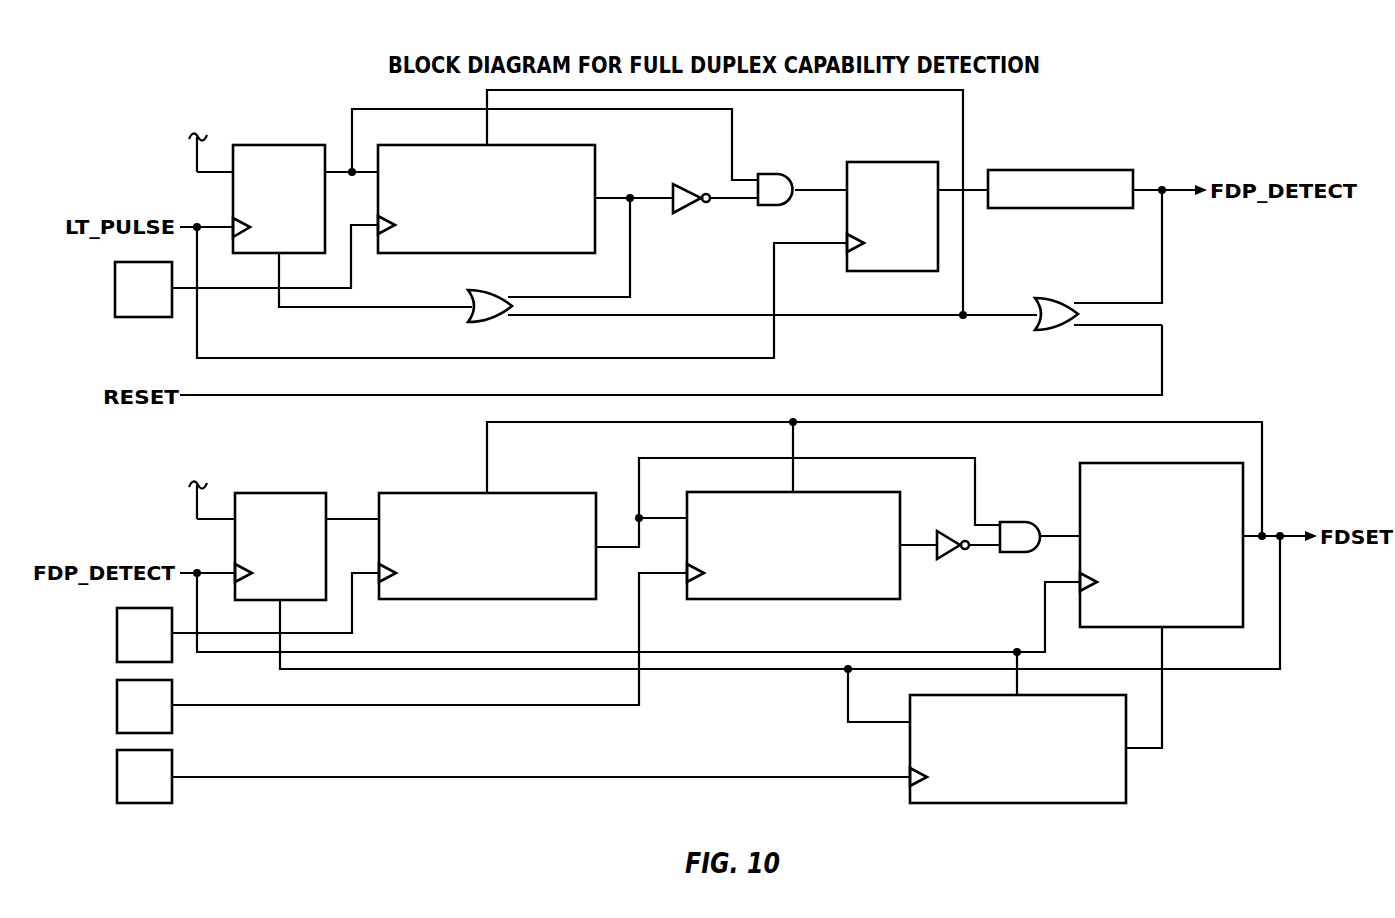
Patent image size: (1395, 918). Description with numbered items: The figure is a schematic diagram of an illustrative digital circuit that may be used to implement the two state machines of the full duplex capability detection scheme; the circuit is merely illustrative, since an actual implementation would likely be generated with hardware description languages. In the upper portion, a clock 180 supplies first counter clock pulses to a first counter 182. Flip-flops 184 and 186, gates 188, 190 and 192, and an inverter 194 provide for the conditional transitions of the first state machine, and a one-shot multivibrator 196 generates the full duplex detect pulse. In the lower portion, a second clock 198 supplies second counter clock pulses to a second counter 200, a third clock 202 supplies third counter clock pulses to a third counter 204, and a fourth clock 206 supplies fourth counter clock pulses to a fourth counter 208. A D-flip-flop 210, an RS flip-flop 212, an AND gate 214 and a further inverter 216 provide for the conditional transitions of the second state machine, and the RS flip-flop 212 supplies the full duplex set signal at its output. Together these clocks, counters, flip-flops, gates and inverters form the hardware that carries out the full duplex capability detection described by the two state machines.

The clock 180 is at (143, 317).
The COUNTER1 182 is at (595, 165).
The flip-flop 184 is at (282, 145).
The flip-flop 186 is at (890, 162).
The gate 188 is at (772, 174).
The gate 190 is at (1035, 325).
The gate 192 is at (468, 318).
The inverter 194 is at (690, 213).
The one-shot multivibrator 196 is at (1062, 170).
The clock 198 is at (117, 638).
The counter 200 is at (432, 493).
The clock 202 is at (117, 709).
The COUNTER3 204 is at (900, 585).
The clock 206 is at (117, 780).
The COUNTER4 208 is at (1126, 778).
The D-flip-flop 210 is at (283, 493).
The RS flip-flop 212 is at (1198, 463).
The AND gate 214 is at (1012, 522).
The inverter 216 is at (940, 531).